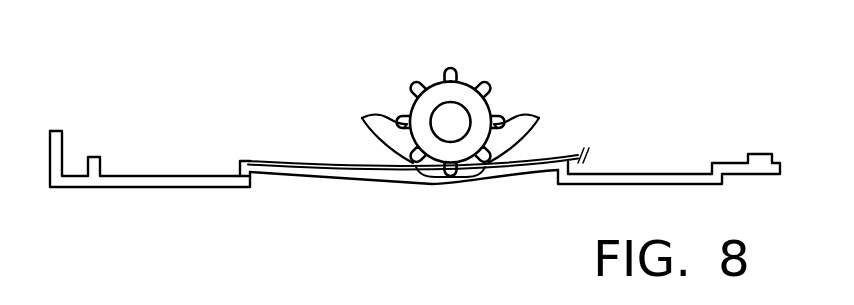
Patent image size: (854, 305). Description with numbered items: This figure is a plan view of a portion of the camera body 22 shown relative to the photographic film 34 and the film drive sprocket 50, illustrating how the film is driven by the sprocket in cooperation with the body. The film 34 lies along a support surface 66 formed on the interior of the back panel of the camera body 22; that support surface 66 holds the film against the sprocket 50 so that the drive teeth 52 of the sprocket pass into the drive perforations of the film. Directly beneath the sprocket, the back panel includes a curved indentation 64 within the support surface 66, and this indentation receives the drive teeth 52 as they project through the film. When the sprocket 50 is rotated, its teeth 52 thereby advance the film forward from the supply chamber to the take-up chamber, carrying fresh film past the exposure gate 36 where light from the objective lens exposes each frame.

The camera body 22 is at (125, 183).
The photographic film 34 is at (297, 158).
The exposure gate 36 is at (301, 70).
The film drive sprocket 50 is at (480, 111).
The drive teeth 52 is at (363, 118).
The curved indentation 64 is at (480, 177).
The support surface 66 is at (244, 160).